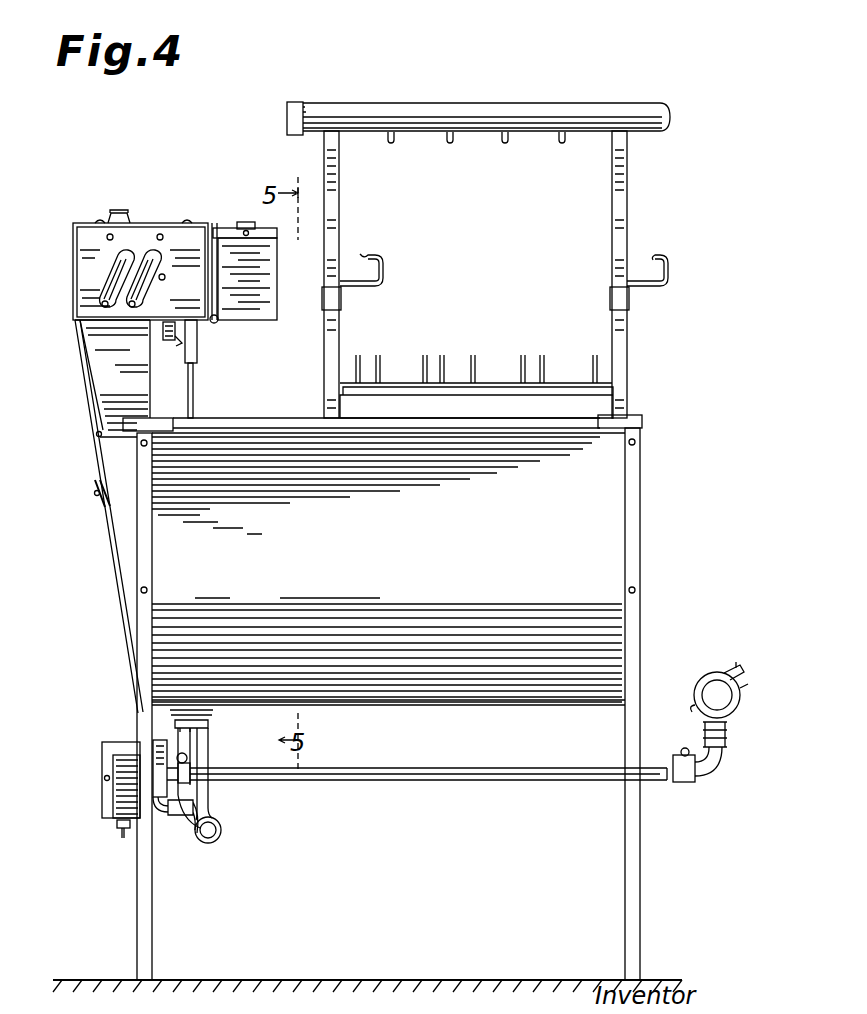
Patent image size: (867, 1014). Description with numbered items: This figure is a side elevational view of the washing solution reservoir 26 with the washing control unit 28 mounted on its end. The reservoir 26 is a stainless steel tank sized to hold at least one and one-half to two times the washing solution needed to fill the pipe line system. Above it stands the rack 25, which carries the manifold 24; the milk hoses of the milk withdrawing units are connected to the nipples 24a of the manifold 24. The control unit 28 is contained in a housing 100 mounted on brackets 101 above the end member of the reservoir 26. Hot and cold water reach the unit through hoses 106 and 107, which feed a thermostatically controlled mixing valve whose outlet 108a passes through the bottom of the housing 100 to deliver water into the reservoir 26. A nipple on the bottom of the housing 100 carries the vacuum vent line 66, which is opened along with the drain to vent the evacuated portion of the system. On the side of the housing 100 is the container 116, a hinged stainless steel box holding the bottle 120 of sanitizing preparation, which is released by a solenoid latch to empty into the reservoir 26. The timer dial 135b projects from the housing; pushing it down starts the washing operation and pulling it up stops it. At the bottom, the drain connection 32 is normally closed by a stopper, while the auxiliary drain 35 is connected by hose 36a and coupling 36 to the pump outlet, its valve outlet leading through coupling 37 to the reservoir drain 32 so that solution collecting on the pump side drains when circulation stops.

The manifold 24 is at (443, 112).
The nipples 24a is at (451, 143).
The rack 25 is at (622, 226).
The washing solution reservoir 26 is at (605, 520).
The washing control unit 28 is at (85, 216).
The drain connection 32 is at (208, 754).
The auxiliary drain 35 is at (102, 758).
The coupling 36 is at (732, 720).
The hose 36a is at (412, 769).
The coupling 37 is at (162, 813).
The vacuum vent line 66 is at (197, 340).
The housing 100 is at (73, 273).
The brackets 101 is at (108, 384).
The hose 106 is at (110, 280).
The hose 107 is at (163, 287).
The outlet 108a is at (163, 380).
The container 116 is at (262, 303).
The bottle 120 is at (242, 224).
The timer dial 135b is at (130, 222).